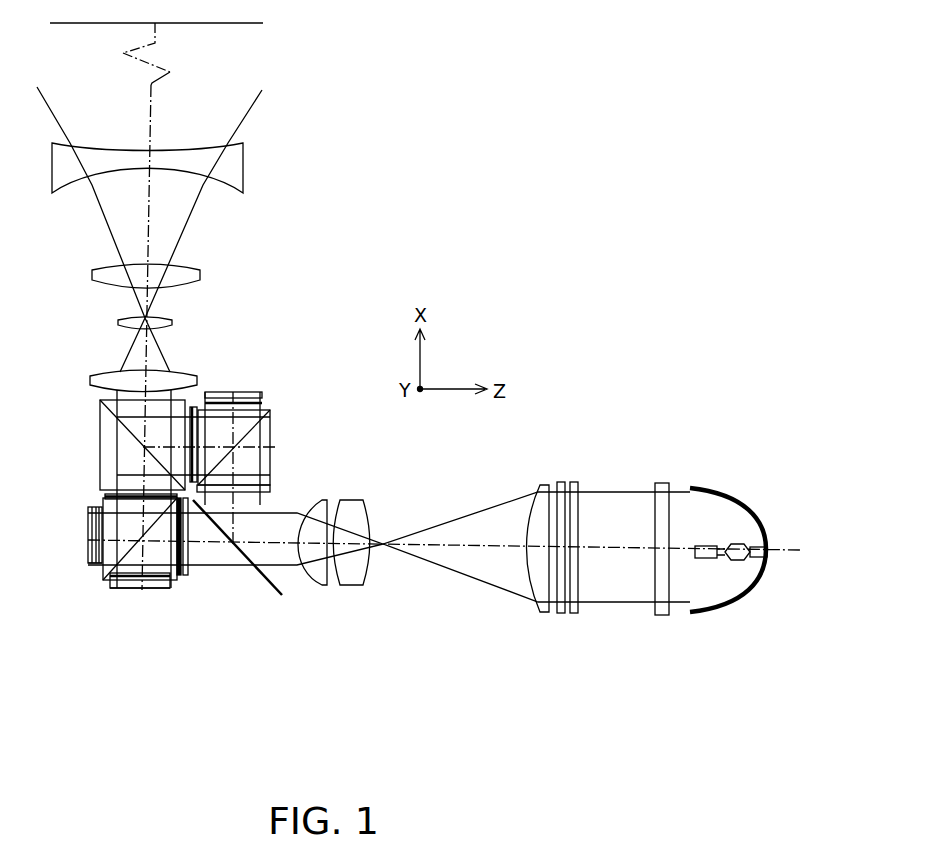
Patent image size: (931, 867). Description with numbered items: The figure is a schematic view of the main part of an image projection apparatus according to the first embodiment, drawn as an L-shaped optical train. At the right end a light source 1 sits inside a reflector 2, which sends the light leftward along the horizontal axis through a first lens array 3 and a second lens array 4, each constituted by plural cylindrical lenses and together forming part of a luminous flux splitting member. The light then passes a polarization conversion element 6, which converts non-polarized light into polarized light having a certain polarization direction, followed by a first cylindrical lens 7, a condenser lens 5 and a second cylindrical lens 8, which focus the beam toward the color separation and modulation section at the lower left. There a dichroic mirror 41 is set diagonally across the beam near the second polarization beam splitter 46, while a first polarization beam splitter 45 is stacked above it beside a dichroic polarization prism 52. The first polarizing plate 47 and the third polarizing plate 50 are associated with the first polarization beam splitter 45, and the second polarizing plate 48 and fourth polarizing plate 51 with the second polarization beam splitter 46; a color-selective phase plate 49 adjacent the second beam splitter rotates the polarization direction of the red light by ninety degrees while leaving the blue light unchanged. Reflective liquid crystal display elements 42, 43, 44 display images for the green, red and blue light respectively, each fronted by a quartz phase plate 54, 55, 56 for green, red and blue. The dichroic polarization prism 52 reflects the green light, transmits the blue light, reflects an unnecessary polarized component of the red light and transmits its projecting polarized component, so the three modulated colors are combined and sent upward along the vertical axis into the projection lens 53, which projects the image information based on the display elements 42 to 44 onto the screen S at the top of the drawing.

The light source 1 is at (745, 538).
The reflector 2 is at (724, 502).
The first lens array 3 is at (663, 483).
The second lens array 4 is at (575, 481).
The condenser lens 5 is at (352, 498).
The polarization conversion element 6 is at (562, 481).
The first cylindrical lens 7 is at (543, 483).
The second cylindrical lens 8 is at (322, 496).
The dichroic mirror 41 is at (269, 593).
The reflective liquid crystal display element 42 is at (245, 392).
The reflective liquid crystal display element 43 is at (128, 588).
The reflective liquid crystal display element 44 is at (88, 532).
The first polarization beam splitter 45 is at (272, 434).
The second polarization beam splitter 46 is at (108, 565).
The first polarizing plate 47 is at (272, 489).
The second polarizing plate 48 is at (186, 575).
The color-selective phase plate 49 is at (180, 578).
The third polarizing plate 50 is at (193, 402).
The fourth polarizing plate 51 is at (105, 497).
The dichroic polarization prism 52 is at (102, 437).
The projection lens 53 is at (228, 263).
The phase plate 54 is at (270, 402).
The phase plate 55 is at (107, 580).
The phase plate 56 is at (102, 568).
The screen S is at (240, 22).